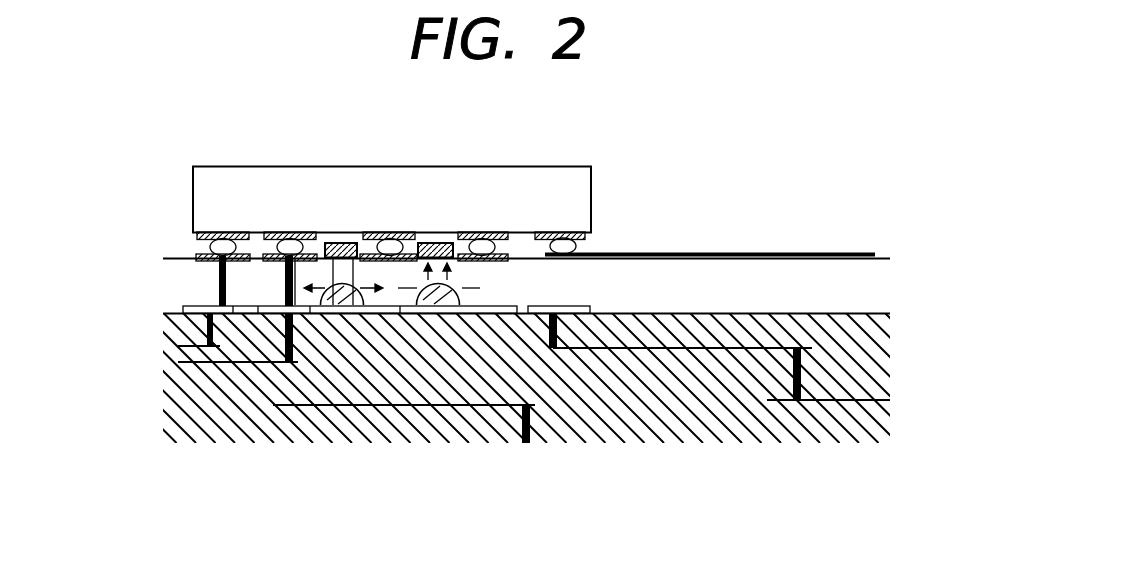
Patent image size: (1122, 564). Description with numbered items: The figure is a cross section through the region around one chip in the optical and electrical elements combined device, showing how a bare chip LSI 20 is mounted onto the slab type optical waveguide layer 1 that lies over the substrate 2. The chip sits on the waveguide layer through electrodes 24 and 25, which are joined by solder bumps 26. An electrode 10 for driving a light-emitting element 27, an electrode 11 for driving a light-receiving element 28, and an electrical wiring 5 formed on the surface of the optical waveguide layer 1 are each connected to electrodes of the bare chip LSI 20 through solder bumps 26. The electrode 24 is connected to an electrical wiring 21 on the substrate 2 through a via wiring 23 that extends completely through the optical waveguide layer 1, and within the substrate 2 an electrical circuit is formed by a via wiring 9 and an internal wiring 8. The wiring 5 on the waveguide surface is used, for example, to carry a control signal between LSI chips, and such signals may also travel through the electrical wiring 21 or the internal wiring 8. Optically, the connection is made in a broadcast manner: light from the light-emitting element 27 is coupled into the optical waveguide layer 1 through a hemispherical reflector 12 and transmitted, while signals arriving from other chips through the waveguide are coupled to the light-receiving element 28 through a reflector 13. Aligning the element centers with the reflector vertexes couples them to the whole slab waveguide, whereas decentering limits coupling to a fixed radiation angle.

The optical waveguide layer 1 is at (880, 287).
The substrate 2 is at (880, 360).
The electrical wiring 5 is at (815, 253).
The internal wiring 8 is at (457, 407).
The via wiring 9 is at (532, 425).
The electrode 10 is at (389, 255).
The electrode 11 is at (455, 257).
The hemispherical reflector 12 is at (338, 302).
The reflector 13 is at (433, 302).
The bare chip LSI 20 is at (585, 201).
The electrical wiring 21 is at (190, 305).
The via wiring 23 is at (218, 280).
The electrode 24 is at (203, 254).
The electrode 25 is at (240, 232).
The solder bump 26 is at (223, 242).
The light-emitting element 27 is at (336, 245).
The light-receiving element 28 is at (439, 243).